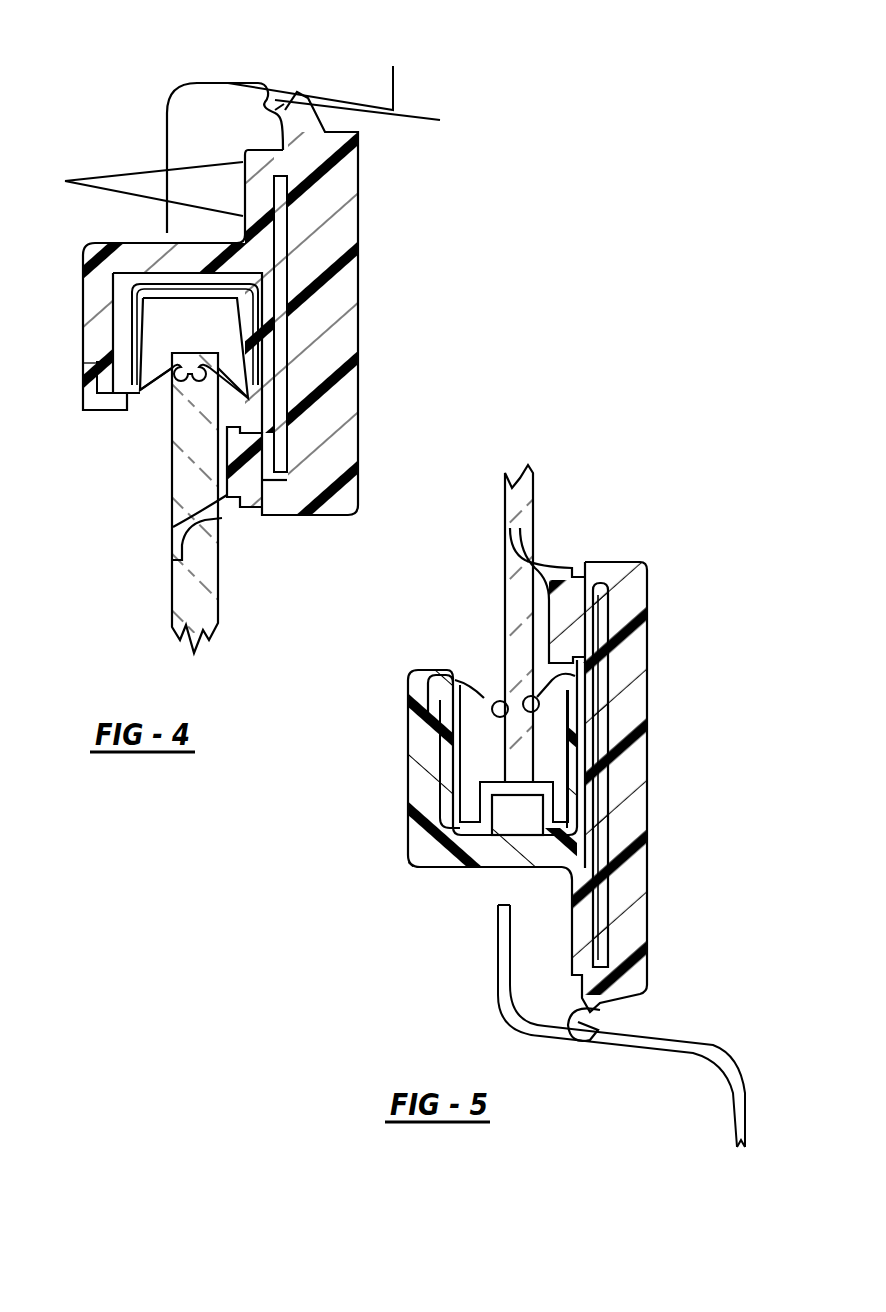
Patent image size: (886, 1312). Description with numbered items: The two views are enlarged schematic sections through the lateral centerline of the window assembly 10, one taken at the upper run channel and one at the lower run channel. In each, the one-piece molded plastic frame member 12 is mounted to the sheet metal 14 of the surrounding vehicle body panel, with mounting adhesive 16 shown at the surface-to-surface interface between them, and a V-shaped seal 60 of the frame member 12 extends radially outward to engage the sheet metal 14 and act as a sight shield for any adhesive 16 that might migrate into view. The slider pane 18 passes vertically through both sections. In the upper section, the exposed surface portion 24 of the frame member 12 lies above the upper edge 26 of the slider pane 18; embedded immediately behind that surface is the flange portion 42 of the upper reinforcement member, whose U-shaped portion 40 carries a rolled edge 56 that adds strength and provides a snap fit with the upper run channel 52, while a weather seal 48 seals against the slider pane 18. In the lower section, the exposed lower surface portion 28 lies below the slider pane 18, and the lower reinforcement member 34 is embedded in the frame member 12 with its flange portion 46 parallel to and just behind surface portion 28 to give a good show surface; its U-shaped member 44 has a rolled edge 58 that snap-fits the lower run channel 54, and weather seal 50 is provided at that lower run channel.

In FIG. 4, the window assembly 10 is at (392, 288).
In FIG. 5, the window assembly 10 is at (686, 619).
In FIG. 4, the frame member 12 is at (335, 460).
In FIG. 5, the frame member 12 is at (420, 773).
In FIG. 4, the sheet metal 14 is at (432, 119).
In FIG. 5, the sheet metal 14 is at (714, 1062).
In FIG. 4, the mounting adhesive 16 is at (150, 183).
In FIG. 4, the slider pane 18 is at (200, 603).
In FIG. 5, the slider pane 18 is at (500, 510).
In FIG. 4, the surface portion 24 is at (360, 183).
In FIG. 4, the upper edge 26 is at (190, 360).
In FIG. 5, the lower surface portion 28 is at (650, 792).
In FIG. 5, the lower reinforcement member 34 is at (599, 597).
In FIG. 4, the U-shaped portion 40 is at (127, 277).
In FIG. 4, the flange portion 42 is at (284, 237).
In FIG. 5, the U-shaped member 44 is at (523, 840).
In FIG. 5, the flange portion 46 is at (604, 708).
In FIG. 4, the weather seal 48 is at (173, 527).
In FIG. 5, the weather seal 50 is at (560, 578).
In FIG. 4, the upper run channel 52 is at (133, 402).
In FIG. 5, the lower run channel 54 is at (460, 678).
In FIG. 4, the rolled edge 56 is at (97, 382).
In FIG. 5, the rolled edge 58 is at (430, 710).
In FIG. 4, the V-shaped seal 60 is at (268, 98).
In FIG. 5, the V-shaped seal 60 is at (580, 1015).